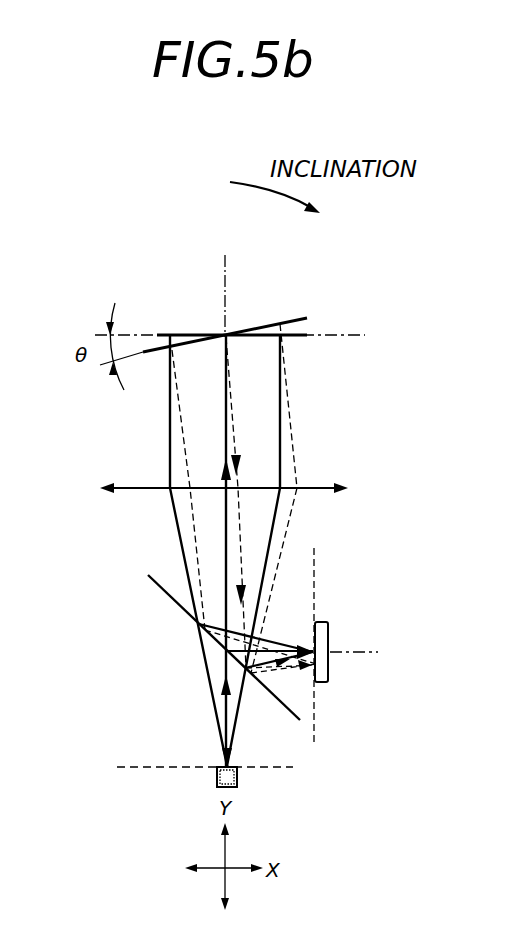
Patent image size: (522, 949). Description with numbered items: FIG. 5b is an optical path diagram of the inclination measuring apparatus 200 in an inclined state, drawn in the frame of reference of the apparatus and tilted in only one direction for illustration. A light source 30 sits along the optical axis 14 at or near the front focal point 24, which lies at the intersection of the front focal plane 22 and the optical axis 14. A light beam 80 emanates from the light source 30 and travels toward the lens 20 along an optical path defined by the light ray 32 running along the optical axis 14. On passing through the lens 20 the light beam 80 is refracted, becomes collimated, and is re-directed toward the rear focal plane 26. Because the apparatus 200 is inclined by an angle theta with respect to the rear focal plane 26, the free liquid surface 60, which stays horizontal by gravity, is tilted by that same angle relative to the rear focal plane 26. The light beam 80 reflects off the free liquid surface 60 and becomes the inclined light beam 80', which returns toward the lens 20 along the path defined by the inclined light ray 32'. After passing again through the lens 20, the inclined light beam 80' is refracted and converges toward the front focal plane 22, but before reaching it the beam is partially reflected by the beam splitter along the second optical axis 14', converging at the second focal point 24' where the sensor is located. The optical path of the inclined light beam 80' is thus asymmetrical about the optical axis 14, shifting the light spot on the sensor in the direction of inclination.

The inclination measuring apparatus 200 is at (118, 262).
The optical axis 14 is at (255, 283).
The free liquid surface 60 is at (263, 323).
The rear focal plane 26 is at (343, 337).
The inclined light ray 32' is at (287, 542).
The inclined light beam 80' is at (294, 545).
The lens 20 is at (313, 493).
The light ray 32 is at (186, 550).
The second focal point 24' is at (353, 645).
The second optical axis 14' is at (380, 676).
The light beam 80 is at (213, 647).
The front focal point 24 is at (171, 788).
The light source 30 is at (237, 785).
The front focal plane 22 is at (293, 768).